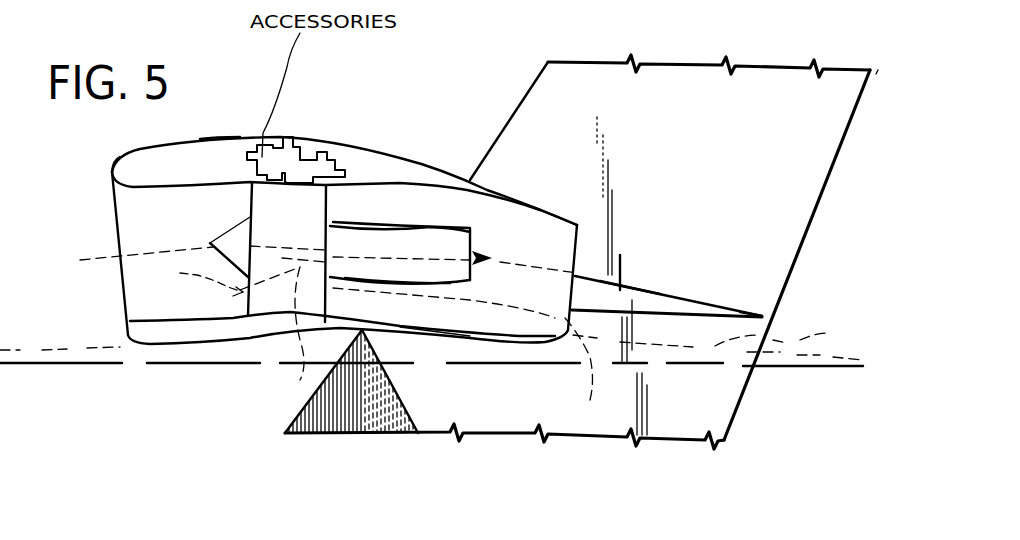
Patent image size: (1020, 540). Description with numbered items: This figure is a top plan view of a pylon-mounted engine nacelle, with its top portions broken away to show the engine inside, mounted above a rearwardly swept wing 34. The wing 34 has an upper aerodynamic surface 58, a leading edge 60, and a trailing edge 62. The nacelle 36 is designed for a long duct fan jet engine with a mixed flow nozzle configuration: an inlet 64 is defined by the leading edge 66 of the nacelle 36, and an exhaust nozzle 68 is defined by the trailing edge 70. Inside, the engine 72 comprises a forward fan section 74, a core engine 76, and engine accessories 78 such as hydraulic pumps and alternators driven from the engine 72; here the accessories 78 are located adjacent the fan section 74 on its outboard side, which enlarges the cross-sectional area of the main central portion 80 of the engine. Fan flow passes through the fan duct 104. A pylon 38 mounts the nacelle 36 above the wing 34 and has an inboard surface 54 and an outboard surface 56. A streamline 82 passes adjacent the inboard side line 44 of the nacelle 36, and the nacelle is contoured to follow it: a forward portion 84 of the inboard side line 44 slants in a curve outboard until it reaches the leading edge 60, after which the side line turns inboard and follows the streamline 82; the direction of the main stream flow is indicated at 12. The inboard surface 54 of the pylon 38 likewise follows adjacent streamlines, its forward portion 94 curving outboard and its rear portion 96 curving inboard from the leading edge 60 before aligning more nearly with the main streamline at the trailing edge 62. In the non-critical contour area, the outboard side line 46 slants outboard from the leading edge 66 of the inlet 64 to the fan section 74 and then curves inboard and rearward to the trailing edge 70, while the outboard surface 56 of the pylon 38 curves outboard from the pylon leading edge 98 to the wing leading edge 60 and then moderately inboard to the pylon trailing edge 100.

The direction of main stream flow 12 is at (413, 366).
The rearwardly swept wing 34 is at (786, 209).
The nacelle 36 is at (347, 136).
The pylon 38 is at (673, 300).
The inboard side line 44 is at (438, 335).
The outboard side line 46 is at (227, 138).
The inboard surface 54 is at (650, 313).
The outboard surface 56 is at (630, 287).
The upper aerodynamic surface 58 is at (577, 252).
The leading edge 60 is at (490, 147).
The trailing edge 62 is at (840, 158).
The inlet 64 is at (125, 232).
The leading edge 66 is at (110, 172).
The exhaust nozzle 68 is at (565, 243).
The trailing edge 70 is at (580, 223).
The engine 72 is at (406, 217).
The forward fan section 74 is at (252, 207).
The core engine 76 is at (428, 275).
The engine accessories 78 is at (277, 157).
The main central portion 80 is at (306, 128).
The streamline 82 is at (57, 350).
The forward portion 84 is at (227, 332).
The forward portion 94 is at (300, 382).
The rear portion 96 is at (570, 371).
The pylon leading edge 98 is at (328, 282).
The trailing edge 100 is at (755, 314).
The fan duct 104 is at (401, 212).